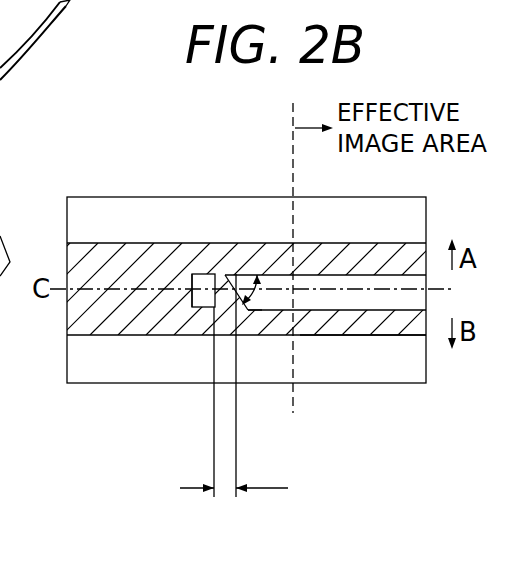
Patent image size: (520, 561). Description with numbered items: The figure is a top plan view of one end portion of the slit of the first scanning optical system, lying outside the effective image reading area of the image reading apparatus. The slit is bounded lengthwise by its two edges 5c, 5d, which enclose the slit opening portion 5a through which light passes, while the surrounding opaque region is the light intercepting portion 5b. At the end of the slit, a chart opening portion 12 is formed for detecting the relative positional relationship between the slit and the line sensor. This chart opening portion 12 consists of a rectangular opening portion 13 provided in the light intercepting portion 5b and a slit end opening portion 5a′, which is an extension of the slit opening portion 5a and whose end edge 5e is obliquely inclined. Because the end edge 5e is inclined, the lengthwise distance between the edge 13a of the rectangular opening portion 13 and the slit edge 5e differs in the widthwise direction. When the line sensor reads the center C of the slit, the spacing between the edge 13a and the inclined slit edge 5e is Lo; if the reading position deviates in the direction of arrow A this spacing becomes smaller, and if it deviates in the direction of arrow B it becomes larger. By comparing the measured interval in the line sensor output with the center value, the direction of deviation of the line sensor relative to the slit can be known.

The chart opening portion 12 is at (237, 236).
The rectangular opening portion 13 is at (203, 274).
The edge of the rectangular opening portion 13a is at (198, 308).
The slit opening portion 5a is at (397, 312).
The slit end opening portion 5a′ is at (266, 305).
The light intercepting portion 5b is at (377, 336).
The edge of the slit 5c is at (338, 274).
The edge of the slit 5d is at (353, 336).
The end edge of the slit end opening portion 5e is at (257, 273).
The spacing between the rectangular opening edge and the inclined slit edge Lo is at (234, 385).